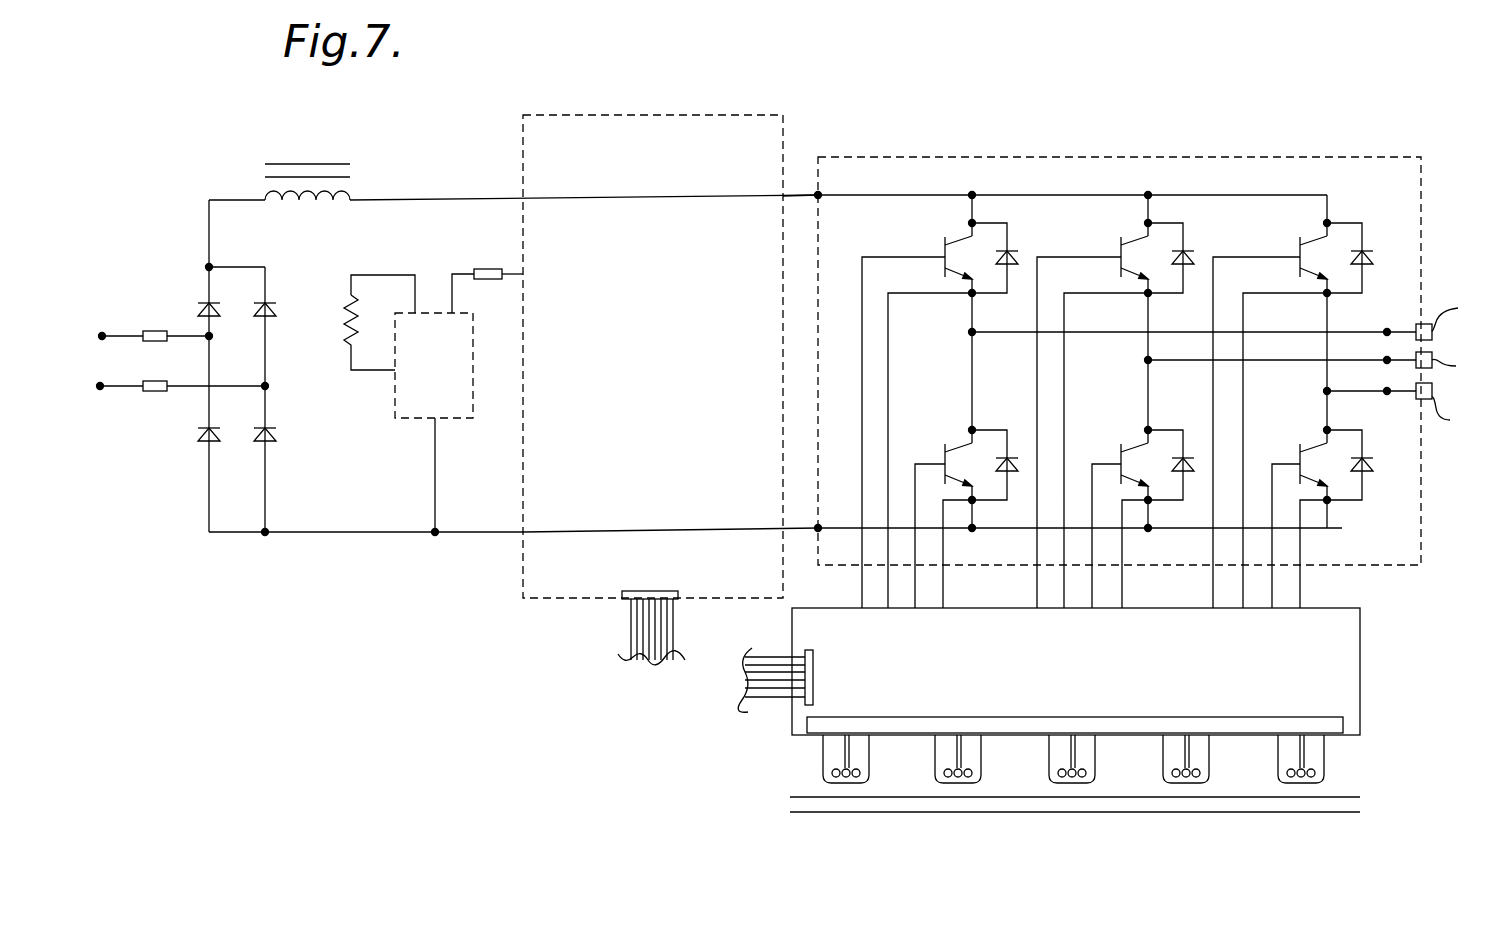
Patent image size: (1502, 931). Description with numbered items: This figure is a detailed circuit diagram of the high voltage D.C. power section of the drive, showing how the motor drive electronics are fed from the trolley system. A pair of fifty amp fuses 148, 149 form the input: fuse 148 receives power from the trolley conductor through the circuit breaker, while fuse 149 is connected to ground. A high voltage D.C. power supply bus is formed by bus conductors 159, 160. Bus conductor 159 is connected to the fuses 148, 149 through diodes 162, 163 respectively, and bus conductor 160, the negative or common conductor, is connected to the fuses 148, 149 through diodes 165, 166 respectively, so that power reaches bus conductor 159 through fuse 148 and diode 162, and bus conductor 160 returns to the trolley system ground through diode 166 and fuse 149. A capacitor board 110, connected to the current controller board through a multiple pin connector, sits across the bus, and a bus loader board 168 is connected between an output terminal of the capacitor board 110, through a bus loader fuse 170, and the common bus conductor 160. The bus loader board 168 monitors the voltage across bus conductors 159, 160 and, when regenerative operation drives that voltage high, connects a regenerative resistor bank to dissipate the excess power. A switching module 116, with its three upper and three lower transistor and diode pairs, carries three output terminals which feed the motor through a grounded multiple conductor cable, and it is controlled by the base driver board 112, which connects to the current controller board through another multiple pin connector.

The capacitor board 110 is at (625, 115).
The base driver board 112 is at (1362, 648).
The switching module 116 is at (1175, 157).
The fuse 148 is at (152, 330).
The fuse 149 is at (150, 392).
The bus conductor 159 is at (390, 200).
The bus conductor 160 is at (300, 532).
The diode 162 is at (207, 305).
The diode 163 is at (272, 305).
The diode 165 is at (200, 436).
The diode 166 is at (272, 437).
The bus loader board 168 is at (395, 388).
The bus loader fuse 170 is at (487, 268).